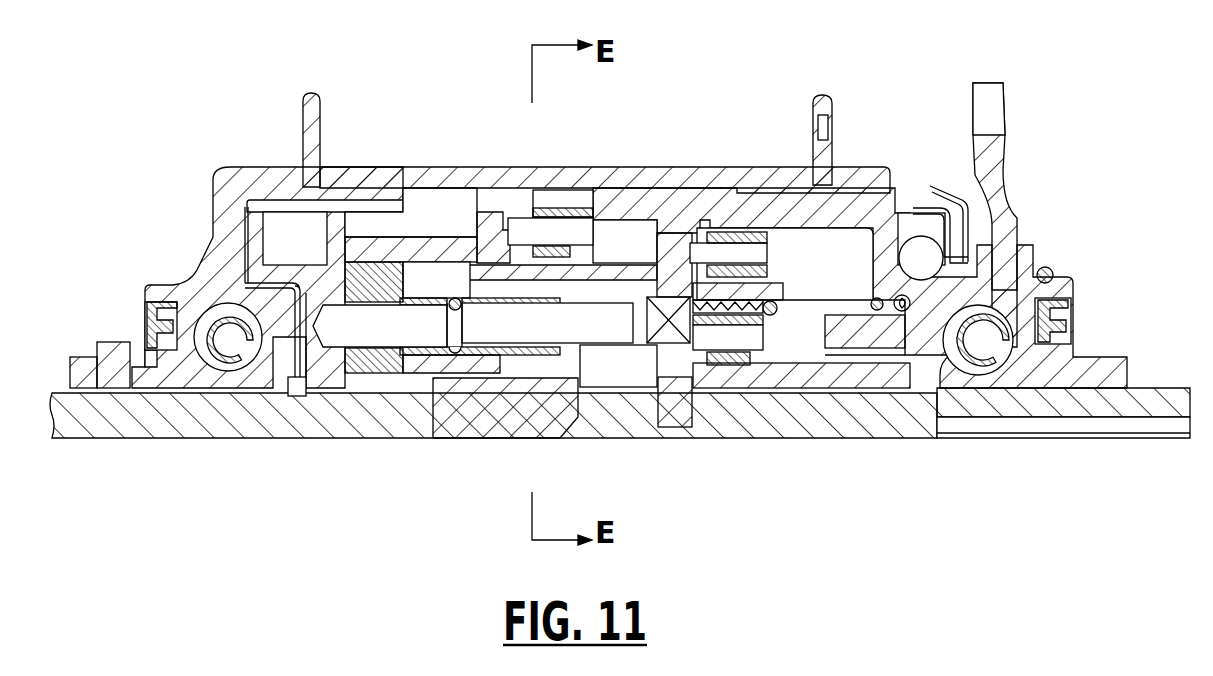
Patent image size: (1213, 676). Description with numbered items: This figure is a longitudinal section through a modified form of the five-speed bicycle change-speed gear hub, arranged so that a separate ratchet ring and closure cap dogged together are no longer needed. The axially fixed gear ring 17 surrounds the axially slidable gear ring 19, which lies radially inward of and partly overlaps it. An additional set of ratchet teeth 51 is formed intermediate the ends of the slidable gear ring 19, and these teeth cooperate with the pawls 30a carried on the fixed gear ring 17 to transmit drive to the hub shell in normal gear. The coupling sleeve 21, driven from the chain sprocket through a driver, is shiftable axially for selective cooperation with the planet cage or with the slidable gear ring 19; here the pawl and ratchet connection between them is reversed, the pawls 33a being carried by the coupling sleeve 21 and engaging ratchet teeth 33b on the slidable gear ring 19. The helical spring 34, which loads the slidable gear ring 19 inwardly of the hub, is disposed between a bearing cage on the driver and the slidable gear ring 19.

The fixed gear ring 17 is at (415, 247).
The slidable gear ring 19 is at (470, 282).
The coupling sleeve 21 is at (780, 372).
The pawls 30a is at (567, 213).
The pawls 33a is at (722, 362).
The ratchet teeth 33b is at (745, 310).
The helical spring 34 is at (802, 328).
The additional set of ratchet teeth 51 is at (533, 268).